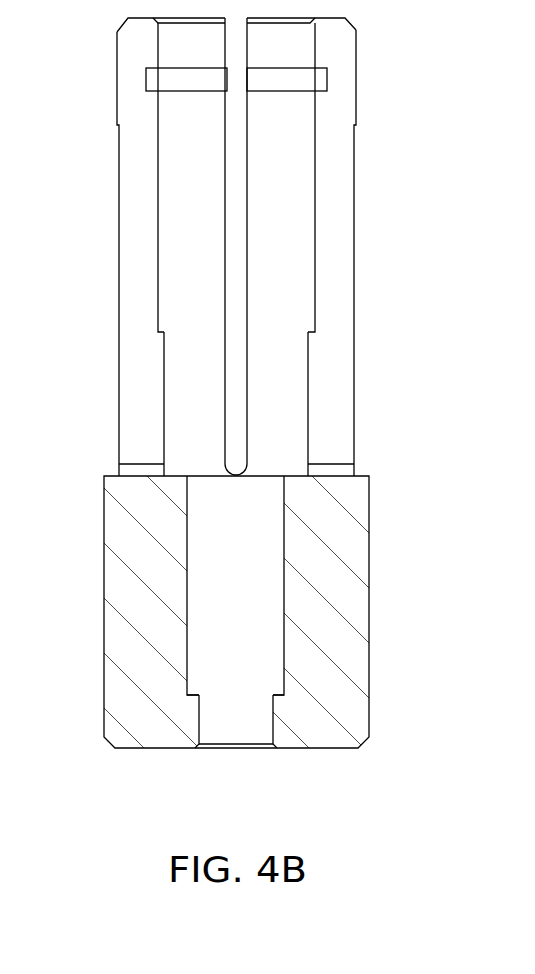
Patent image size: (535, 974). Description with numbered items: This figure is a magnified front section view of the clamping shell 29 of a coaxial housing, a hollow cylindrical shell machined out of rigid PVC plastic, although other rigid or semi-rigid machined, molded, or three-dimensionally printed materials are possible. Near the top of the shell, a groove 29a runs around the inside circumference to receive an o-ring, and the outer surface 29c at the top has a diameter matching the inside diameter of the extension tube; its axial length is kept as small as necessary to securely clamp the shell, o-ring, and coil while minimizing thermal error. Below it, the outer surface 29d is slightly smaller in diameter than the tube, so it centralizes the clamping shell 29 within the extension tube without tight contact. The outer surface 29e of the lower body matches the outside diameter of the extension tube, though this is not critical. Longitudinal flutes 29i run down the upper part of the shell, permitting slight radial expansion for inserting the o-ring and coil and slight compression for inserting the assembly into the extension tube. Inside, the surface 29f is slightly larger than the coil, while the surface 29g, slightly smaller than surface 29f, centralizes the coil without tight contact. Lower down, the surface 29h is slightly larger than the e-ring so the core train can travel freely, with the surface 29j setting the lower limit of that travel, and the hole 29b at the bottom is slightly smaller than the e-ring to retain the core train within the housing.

The clamping shell 29 is at (267, 423).
The groove 29a is at (152, 80).
The hole 29b is at (207, 715).
The surface 29c is at (117, 48).
The surface 29d is at (119, 256).
The surface 29e is at (104, 580).
The surface 29f is at (315, 211).
The surface 29g is at (308, 394).
The surface 29h is at (285, 583).
The longitudinal flutes 29i is at (232, 408).
The surface 29j is at (193, 692).